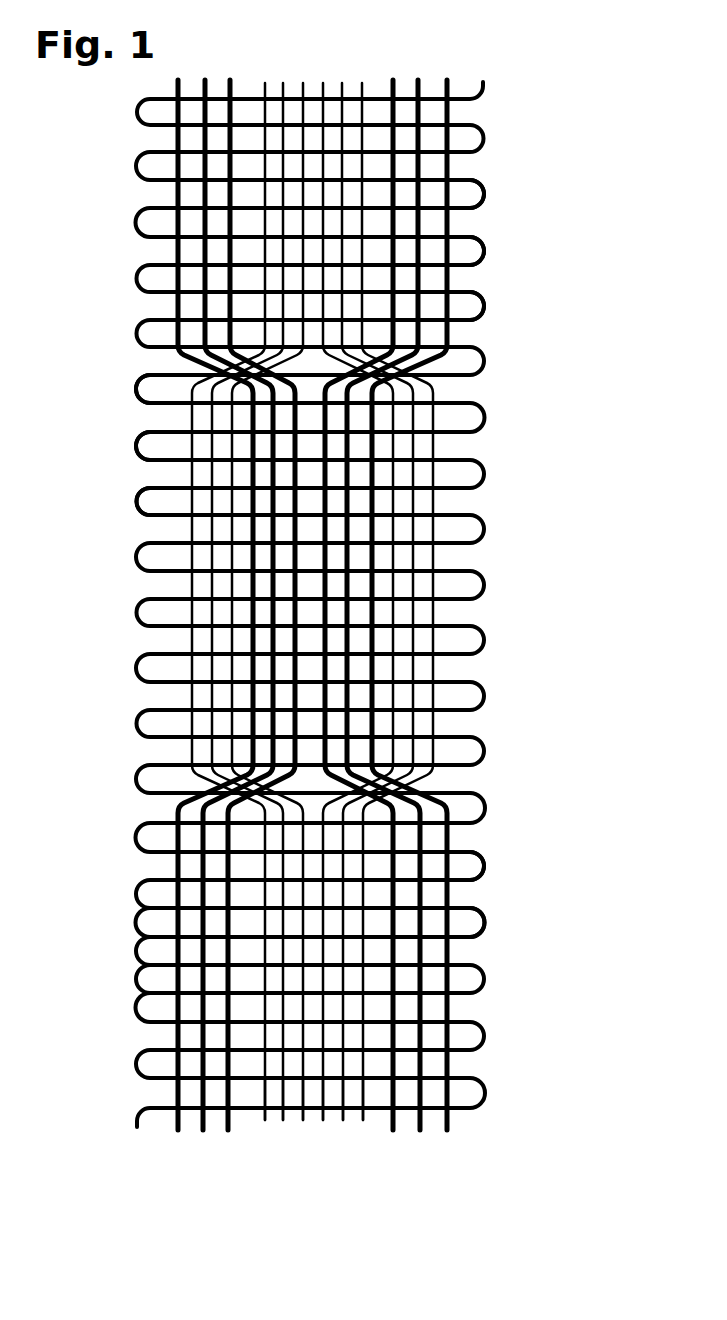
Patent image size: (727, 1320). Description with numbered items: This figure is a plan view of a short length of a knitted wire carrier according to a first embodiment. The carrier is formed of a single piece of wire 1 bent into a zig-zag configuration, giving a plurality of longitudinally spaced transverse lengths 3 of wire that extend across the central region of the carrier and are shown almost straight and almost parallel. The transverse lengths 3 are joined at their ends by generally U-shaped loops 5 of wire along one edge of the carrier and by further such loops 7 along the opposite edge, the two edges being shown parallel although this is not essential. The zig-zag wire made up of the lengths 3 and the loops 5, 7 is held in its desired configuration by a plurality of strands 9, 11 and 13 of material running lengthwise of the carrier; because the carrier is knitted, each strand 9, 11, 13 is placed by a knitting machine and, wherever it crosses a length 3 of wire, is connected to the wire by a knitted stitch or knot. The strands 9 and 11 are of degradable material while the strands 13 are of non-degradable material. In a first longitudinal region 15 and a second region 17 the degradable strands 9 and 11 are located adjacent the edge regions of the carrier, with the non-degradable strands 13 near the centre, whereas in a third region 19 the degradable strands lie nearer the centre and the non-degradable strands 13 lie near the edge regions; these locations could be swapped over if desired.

The wire 1 is at (490, 140).
The transverse lengths of wire 3 is at (377, 207).
The U-shaped loops 5 is at (483, 307).
The loops 7 is at (135, 388).
The strands of degradable material 9 is at (175, 922).
The strands of degradable material 11 is at (397, 925).
The strands of non-degradable material 13 is at (245, 1145).
The first longitudinal region 15 is at (102, 83).
The second region 17 is at (565, 802).
The third region 19 is at (518, 388).